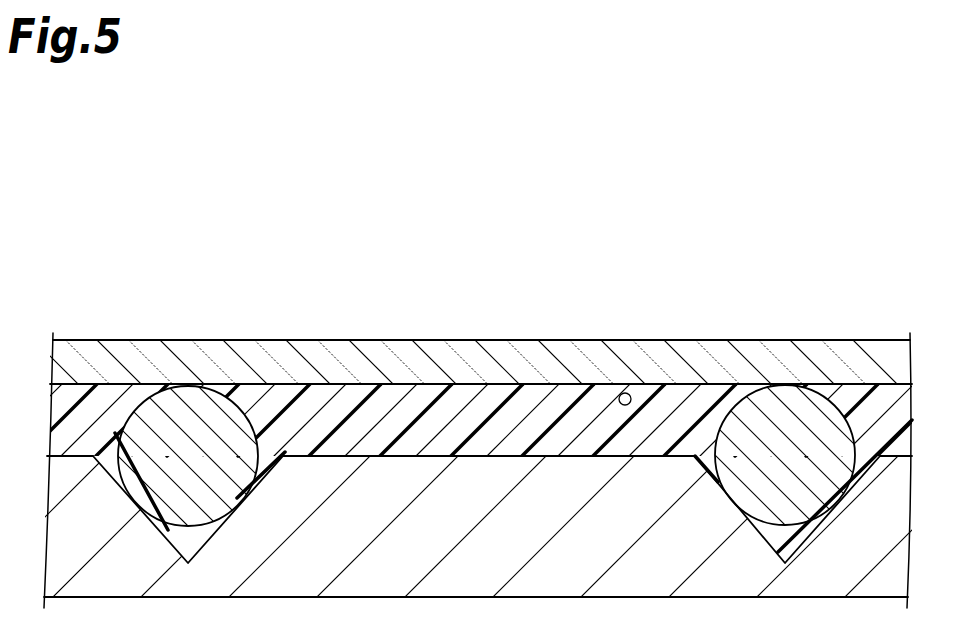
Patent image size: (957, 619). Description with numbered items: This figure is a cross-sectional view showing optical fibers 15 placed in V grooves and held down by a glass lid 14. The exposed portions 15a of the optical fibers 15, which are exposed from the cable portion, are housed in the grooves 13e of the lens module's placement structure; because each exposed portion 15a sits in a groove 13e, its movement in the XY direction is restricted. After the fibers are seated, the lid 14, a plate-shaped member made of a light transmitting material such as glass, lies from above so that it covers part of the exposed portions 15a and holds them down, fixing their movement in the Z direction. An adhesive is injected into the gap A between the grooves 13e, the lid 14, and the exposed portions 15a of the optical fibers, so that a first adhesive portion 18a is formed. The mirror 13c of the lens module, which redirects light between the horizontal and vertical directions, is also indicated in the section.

The lid 14 is at (456, 340).
The first adhesive portion 18a is at (373, 413).
The mirror 13c is at (508, 456).
The grooves 13e is at (173, 543).
The exposed portions 15a is at (180, 420).
The optical fibers 15 is at (502, 389).
The gap A is at (618, 394).